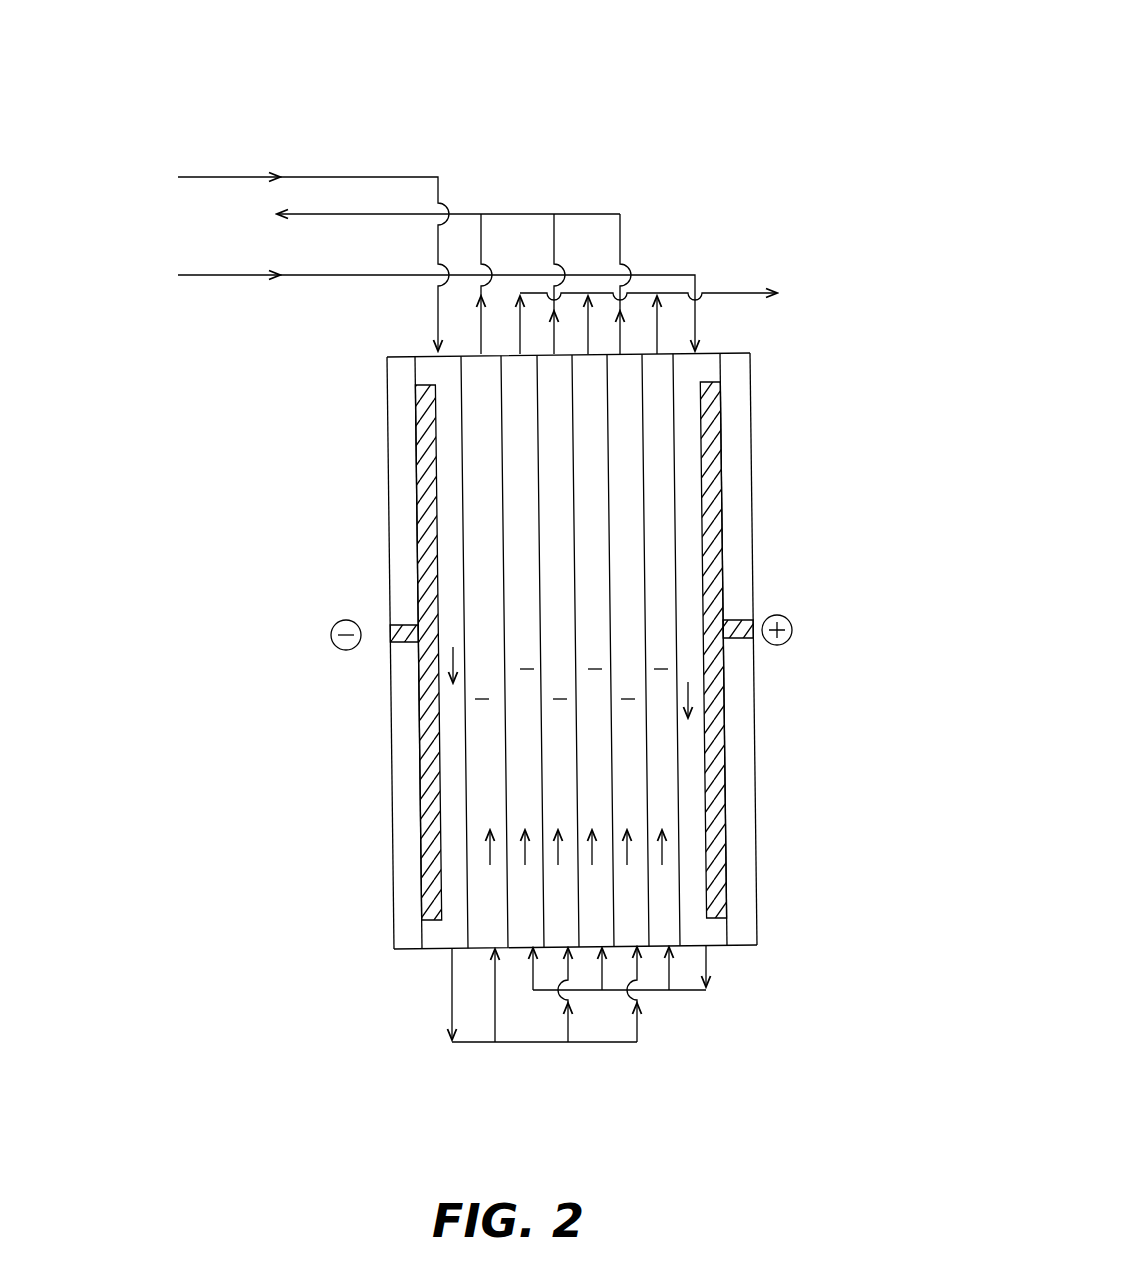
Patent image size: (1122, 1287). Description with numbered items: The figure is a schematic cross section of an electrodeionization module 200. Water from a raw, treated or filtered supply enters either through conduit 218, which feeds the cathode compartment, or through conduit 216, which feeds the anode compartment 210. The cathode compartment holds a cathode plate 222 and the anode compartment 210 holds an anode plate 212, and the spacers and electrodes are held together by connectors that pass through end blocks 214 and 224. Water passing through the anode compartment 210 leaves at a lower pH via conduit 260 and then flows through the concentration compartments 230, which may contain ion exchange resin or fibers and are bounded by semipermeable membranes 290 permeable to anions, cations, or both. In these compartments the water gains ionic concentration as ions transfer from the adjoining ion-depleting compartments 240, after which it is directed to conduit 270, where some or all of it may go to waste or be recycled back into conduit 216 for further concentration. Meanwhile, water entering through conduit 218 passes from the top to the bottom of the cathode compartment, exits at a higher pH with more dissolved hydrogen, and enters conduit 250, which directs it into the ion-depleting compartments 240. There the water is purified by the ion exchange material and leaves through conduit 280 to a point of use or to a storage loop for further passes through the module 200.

The module 200 is at (345, 50).
The anode compartment 210 is at (708, 373).
The anode plate 212 is at (723, 453).
The end block 214 is at (753, 522).
The conduit 216 is at (352, 280).
The conduit 218 is at (364, 175).
The cathode plate 222 is at (416, 487).
The end block 224 is at (389, 573).
The concentration compartments 230 is at (527, 650).
The ion-depleting compartments 240 is at (628, 700).
The conduit 250 is at (525, 1044).
The conduit 260 is at (684, 991).
The conduit 270 is at (427, 370).
The conduit 280 is at (498, 212).
The semipermeable membranes 290 is at (615, 915).